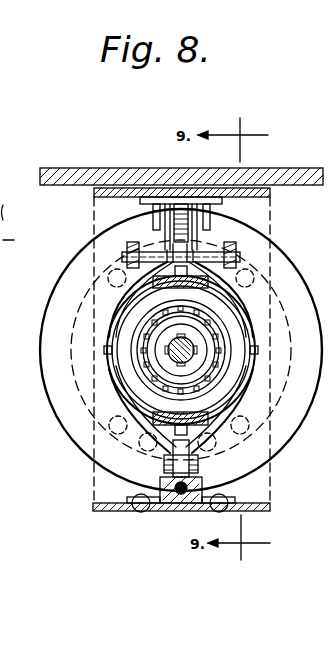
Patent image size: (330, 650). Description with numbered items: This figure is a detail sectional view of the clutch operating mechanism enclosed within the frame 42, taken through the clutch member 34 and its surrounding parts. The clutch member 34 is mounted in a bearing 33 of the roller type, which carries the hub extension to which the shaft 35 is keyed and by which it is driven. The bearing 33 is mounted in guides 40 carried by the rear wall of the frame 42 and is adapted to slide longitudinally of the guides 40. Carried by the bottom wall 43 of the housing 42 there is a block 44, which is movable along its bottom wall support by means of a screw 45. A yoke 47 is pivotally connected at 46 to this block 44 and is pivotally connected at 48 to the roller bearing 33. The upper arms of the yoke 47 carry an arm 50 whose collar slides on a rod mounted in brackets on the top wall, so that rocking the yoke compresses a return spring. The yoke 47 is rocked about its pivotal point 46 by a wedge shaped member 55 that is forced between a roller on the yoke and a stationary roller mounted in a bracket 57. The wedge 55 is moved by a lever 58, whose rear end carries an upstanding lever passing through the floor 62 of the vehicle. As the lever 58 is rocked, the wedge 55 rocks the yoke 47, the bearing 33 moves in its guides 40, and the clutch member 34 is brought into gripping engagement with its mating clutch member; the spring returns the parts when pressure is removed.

The floor 62 is at (117, 168).
The bracket 57 is at (200, 222).
The wedge shaped member 55 is at (186, 245).
The arm 50 is at (132, 242).
The lever 58 is at (18, 241).
The clutch member 34 is at (294, 295).
The guides 40 is at (116, 290).
The pivotal connection 48 is at (259, 351).
The yoke 47 is at (243, 400).
The shaft 35 is at (167, 355).
The bearing 33 is at (127, 463).
The pivotal connection 46 is at (199, 461).
The block 44 is at (192, 488).
The screw 45 is at (178, 496).
The bottom wall 43 is at (92, 512).
The frame 42 is at (93, 479).